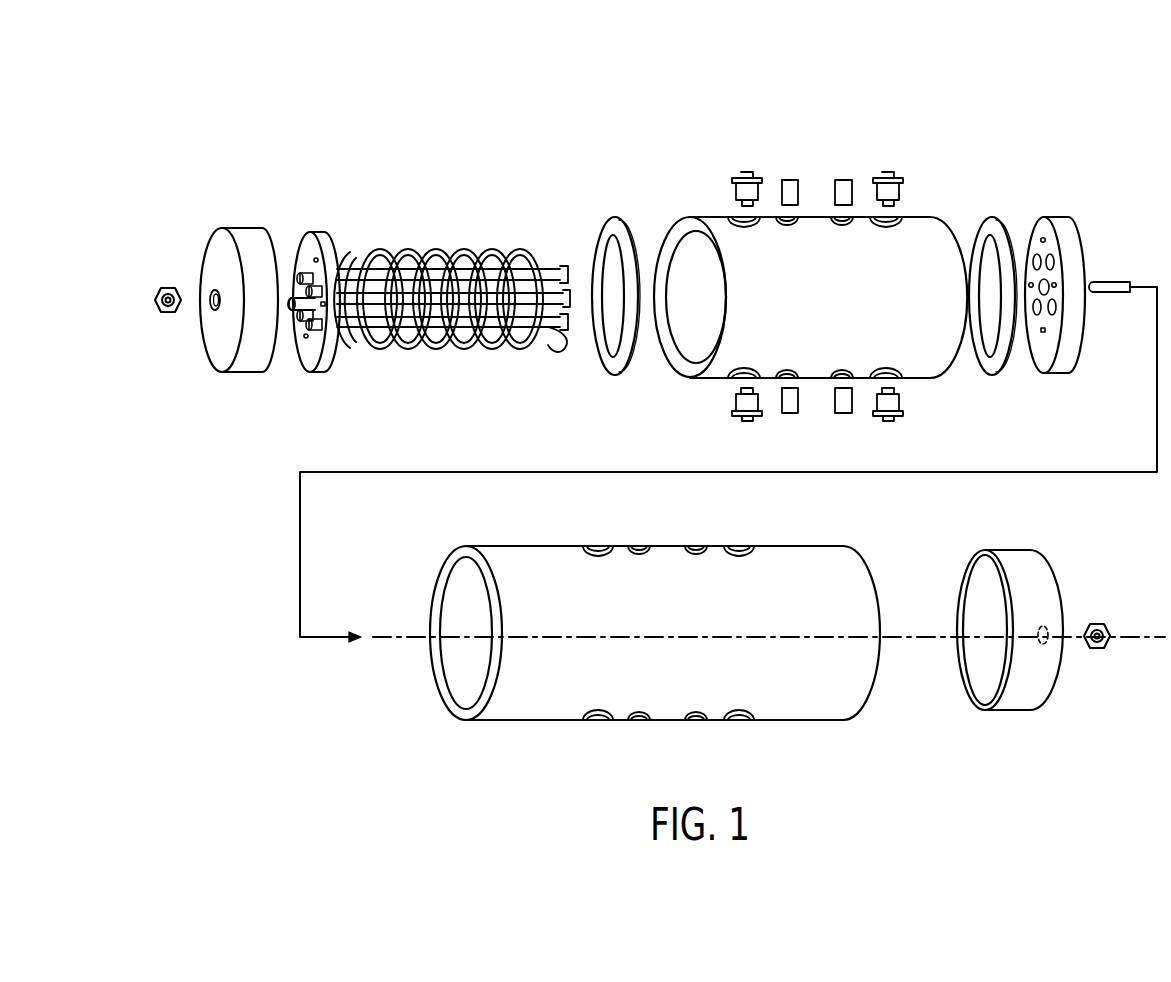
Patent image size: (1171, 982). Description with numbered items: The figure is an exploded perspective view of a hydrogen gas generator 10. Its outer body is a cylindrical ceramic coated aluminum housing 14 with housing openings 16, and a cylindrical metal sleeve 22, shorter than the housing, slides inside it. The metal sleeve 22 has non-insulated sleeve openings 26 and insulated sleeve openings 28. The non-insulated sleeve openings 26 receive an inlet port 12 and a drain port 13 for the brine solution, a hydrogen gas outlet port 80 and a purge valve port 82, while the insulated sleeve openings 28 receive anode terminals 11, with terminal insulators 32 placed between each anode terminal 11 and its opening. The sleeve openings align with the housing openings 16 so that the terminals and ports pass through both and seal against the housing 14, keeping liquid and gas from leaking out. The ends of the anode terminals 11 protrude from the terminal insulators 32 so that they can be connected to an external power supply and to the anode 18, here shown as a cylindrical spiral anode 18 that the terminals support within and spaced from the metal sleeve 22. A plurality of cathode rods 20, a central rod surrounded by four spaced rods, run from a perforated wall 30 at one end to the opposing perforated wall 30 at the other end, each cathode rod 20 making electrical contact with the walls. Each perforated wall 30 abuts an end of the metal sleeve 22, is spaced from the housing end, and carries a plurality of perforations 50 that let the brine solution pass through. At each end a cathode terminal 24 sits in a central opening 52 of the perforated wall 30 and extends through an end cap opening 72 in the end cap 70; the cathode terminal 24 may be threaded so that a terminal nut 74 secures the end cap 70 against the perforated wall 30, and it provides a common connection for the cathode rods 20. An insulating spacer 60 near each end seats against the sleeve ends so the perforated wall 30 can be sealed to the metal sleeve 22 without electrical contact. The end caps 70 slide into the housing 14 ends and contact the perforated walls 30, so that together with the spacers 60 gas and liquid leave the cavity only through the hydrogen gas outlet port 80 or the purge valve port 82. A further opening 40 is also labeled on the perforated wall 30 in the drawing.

The hydrogen gas generator 10 is at (244, 110).
The anode terminal 11 is at (748, 172).
The inlet port 12 is at (788, 414).
The drain port 13 is at (840, 414).
The housing 14 is at (829, 611).
The housing openings 16 is at (640, 557).
The anode 18 is at (408, 250).
The cathode rods 20 is at (557, 344).
The metal sleeve 22 is at (932, 355).
The cathode terminal 24 is at (298, 315).
The non-insulated sleeve openings 26 is at (842, 227).
The insulated sleeve openings 28 is at (745, 228).
The perforated wall 30 is at (307, 240).
The terminal insulators 32 is at (735, 190).
The opening 40 is at (1052, 312).
The perforations 50 is at (318, 264).
The central opening 52 is at (1046, 287).
The insulating spacer 60 is at (612, 228).
The end cap 70 is at (244, 242).
The end cap opening 72 is at (212, 290).
The terminal nut 74 is at (171, 316).
The hydrogen gas outlet port 80 is at (790, 182).
The purge valve port 82 is at (841, 182).